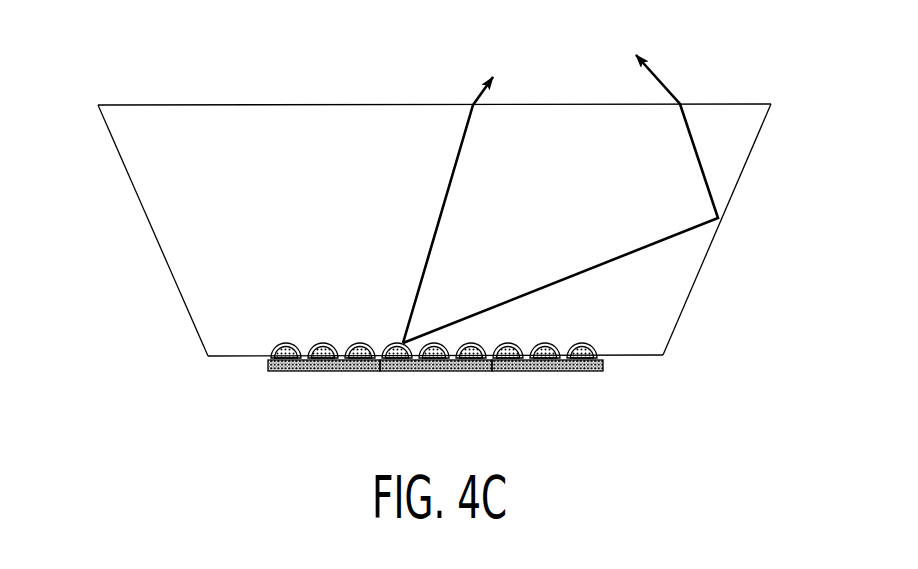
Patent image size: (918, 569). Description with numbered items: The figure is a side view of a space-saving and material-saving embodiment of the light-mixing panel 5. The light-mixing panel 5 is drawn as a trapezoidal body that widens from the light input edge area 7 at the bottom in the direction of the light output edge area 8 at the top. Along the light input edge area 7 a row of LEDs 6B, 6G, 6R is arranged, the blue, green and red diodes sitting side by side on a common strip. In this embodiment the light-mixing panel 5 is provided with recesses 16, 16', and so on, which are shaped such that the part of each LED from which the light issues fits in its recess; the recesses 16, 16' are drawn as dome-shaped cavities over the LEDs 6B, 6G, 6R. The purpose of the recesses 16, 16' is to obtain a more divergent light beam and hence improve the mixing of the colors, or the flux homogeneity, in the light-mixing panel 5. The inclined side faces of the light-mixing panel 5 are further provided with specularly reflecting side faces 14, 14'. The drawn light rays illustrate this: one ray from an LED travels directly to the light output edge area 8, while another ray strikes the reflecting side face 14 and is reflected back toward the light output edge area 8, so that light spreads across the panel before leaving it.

The light-mixing panel 5 is at (118, 270).
The light input edge area 7 is at (632, 356).
The light output edge area 8 is at (337, 109).
The reflecting side face 14 is at (739, 229).
The reflecting side face 14' is at (131, 230).
The recess 16 is at (285, 325).
The recess 16' is at (323, 325).
The blue LED 6B is at (283, 372).
The green LED 6G is at (322, 372).
The red LED 6R is at (358, 372).